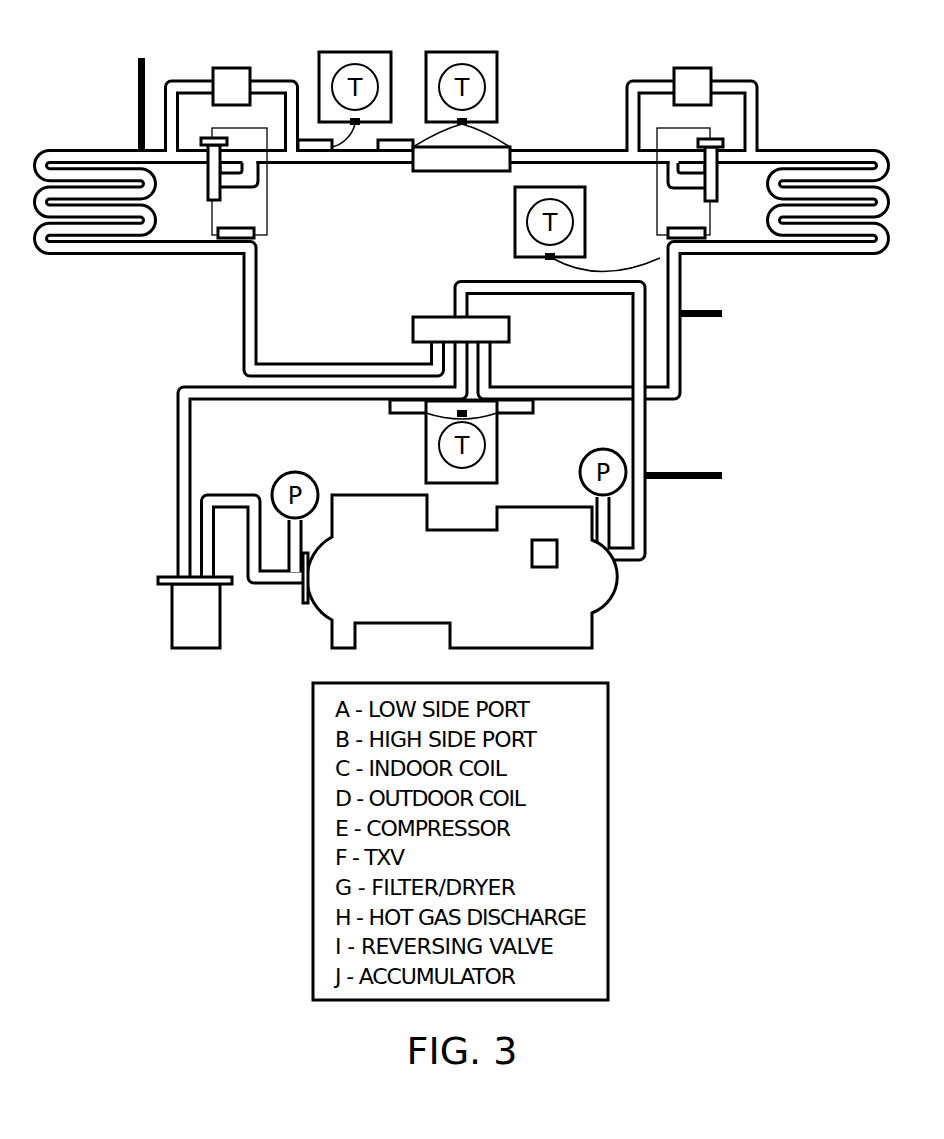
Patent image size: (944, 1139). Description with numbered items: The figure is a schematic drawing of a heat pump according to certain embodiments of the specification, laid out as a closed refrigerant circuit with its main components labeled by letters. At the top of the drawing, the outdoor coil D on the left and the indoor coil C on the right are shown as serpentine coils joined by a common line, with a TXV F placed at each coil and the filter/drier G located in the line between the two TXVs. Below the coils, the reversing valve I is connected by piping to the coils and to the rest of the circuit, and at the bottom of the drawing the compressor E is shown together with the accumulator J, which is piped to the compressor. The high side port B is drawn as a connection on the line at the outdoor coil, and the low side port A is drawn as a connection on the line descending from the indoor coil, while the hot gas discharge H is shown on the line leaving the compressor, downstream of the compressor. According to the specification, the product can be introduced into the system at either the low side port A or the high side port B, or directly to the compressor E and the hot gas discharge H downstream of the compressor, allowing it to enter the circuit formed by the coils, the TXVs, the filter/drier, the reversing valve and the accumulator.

The low side port A is at (715, 316).
The high side port B is at (142, 90).
The indoor coil C is at (683, 257).
The outdoor coil D is at (238, 245).
The compressor E is at (460, 571).
The TXV F is at (462, 153).
The filter/drier G is at (461, 173).
The hot gas discharge H is at (698, 476).
The reversing valve I is at (452, 331).
The accumulator J is at (195, 612).